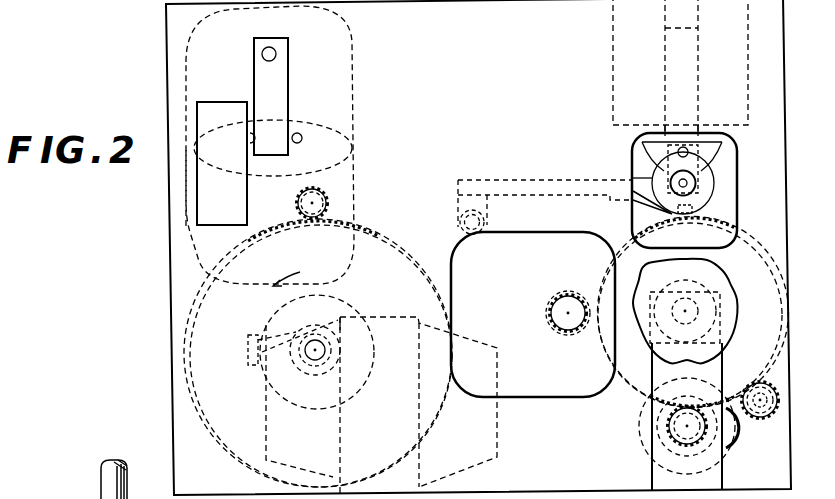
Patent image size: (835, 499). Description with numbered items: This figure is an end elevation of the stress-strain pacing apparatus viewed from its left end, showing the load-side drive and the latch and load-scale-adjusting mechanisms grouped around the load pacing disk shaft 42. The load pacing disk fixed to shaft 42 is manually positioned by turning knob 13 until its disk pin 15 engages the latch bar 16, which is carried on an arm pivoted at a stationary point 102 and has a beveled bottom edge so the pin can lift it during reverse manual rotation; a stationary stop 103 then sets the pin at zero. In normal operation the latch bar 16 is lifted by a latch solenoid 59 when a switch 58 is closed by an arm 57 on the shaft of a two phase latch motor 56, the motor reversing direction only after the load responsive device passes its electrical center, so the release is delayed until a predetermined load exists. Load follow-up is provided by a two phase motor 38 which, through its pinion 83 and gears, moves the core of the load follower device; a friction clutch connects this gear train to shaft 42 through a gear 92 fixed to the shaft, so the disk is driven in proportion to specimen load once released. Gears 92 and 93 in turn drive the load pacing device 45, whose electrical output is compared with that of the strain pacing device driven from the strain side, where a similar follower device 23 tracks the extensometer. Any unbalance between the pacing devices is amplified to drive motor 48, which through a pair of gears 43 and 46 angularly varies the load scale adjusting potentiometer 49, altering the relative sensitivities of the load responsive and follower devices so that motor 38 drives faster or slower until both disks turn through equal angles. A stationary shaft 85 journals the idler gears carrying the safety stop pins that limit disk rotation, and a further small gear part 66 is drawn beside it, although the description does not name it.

The knob 13 is at (648, 282).
The disk pin 15 is at (690, 213).
The latch bar 16 is at (645, 210).
The electro-magnetic motion responsive device 23 is at (498, 458).
The two phase motor 38 is at (553, 394).
The shaft 42 is at (101, 487).
The gear 43 is at (326, 200).
The load pacing device 45 is at (733, 445).
The gear 46 is at (360, 229).
The motor 48 is at (193, 248).
The load scale adjusting potentiometer 49 is at (357, 313).
The two phase motor 56 is at (186, 55).
The arm 57 is at (277, 101).
The switch 58 is at (197, 185).
The latch solenoid 59 is at (613, 46).
The idler gear shaft 66 is at (757, 412).
The motor pinion 83 is at (563, 336).
The stationary shaft 85 is at (748, 386).
The gear 92 is at (652, 398).
The gear 93 is at (665, 437).
The stationary point 102 is at (488, 214).
The stationary stop 103 is at (692, 210).